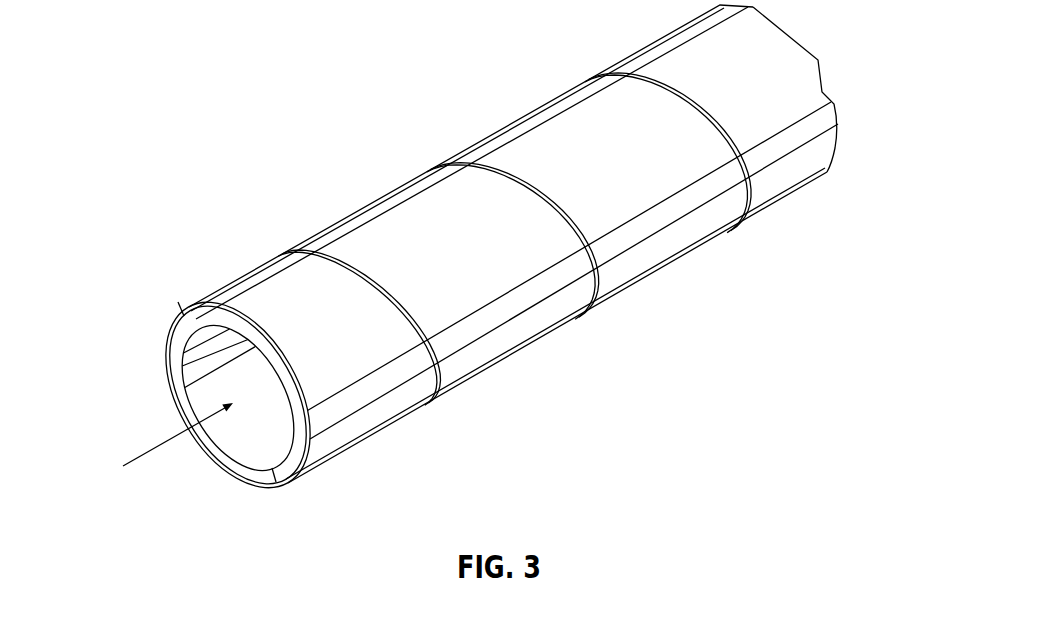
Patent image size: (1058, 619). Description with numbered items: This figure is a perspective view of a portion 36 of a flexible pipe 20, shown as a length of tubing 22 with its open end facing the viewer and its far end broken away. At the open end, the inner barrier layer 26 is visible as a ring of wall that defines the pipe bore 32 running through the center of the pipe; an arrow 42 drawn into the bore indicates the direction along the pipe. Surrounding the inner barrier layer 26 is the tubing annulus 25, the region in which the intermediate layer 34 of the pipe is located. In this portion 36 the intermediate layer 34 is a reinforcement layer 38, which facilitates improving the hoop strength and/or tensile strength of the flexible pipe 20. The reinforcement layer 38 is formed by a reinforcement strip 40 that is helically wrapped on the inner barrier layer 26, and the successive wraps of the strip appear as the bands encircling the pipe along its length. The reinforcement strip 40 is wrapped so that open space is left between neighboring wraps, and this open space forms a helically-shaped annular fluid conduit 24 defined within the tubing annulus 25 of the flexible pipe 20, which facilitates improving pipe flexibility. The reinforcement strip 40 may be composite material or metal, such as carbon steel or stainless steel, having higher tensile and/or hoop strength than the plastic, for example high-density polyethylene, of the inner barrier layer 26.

The flexible pipe 20 is at (176, 203).
The portion of the flexible pipe 36 is at (206, 347).
The intermediate layer 34 is at (772, 45).
The reinforcement layer 38 is at (817, 89).
The tubing 22 is at (273, 489).
The annular fluid conduit 24 is at (364, 283).
The tubing annulus 25 is at (181, 312).
The inner barrier layer 26 is at (240, 470).
The pipe bore 32 is at (198, 370).
The reinforcement strip 40 is at (337, 342).
The flow path 42 is at (143, 454).